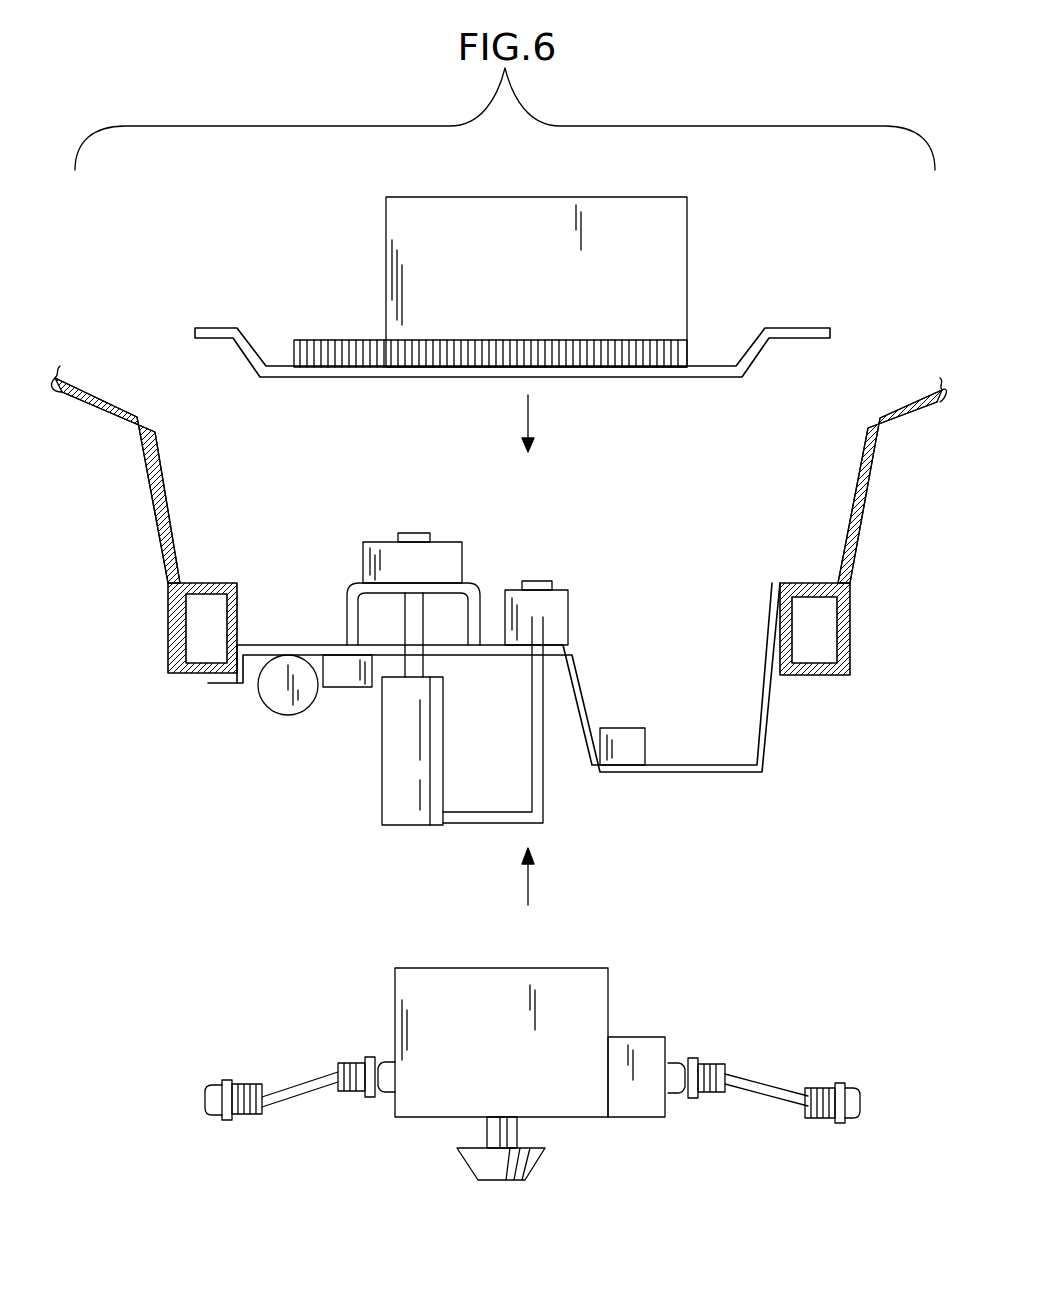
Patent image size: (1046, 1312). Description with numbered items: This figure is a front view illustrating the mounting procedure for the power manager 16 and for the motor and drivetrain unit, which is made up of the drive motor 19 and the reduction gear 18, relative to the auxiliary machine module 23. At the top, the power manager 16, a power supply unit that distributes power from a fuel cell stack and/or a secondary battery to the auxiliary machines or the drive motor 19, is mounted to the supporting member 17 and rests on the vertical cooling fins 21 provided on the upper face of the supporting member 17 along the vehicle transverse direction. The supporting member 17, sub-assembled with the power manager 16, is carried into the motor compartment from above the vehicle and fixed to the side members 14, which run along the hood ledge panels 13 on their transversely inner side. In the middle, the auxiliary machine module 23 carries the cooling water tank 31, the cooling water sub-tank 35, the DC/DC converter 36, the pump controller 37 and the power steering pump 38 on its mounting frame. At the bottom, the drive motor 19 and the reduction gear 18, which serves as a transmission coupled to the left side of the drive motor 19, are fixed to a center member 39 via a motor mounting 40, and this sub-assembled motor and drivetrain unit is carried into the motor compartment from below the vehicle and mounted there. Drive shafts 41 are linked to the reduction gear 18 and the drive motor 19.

The hood ledge panel 13 is at (870, 487).
The side member 14 is at (810, 657).
The power manager 16 is at (668, 258).
The supporting member 17 is at (737, 380).
The reduction gear 18 is at (640, 1050).
The drive motor 19 is at (590, 1000).
The cooling fins 21 is at (345, 352).
The auxiliary machine module 23 is at (600, 662).
The cooling water tank 31 is at (383, 550).
The cooling water sub-tank 35 is at (557, 590).
The DC/DC converter 36 is at (625, 745).
The pump controller 37 is at (350, 675).
The power steering pump 38 is at (272, 690).
The center member 39 is at (540, 1158).
The motor mounting 40 is at (510, 1130).
The drive shaft 41 is at (300, 1085).